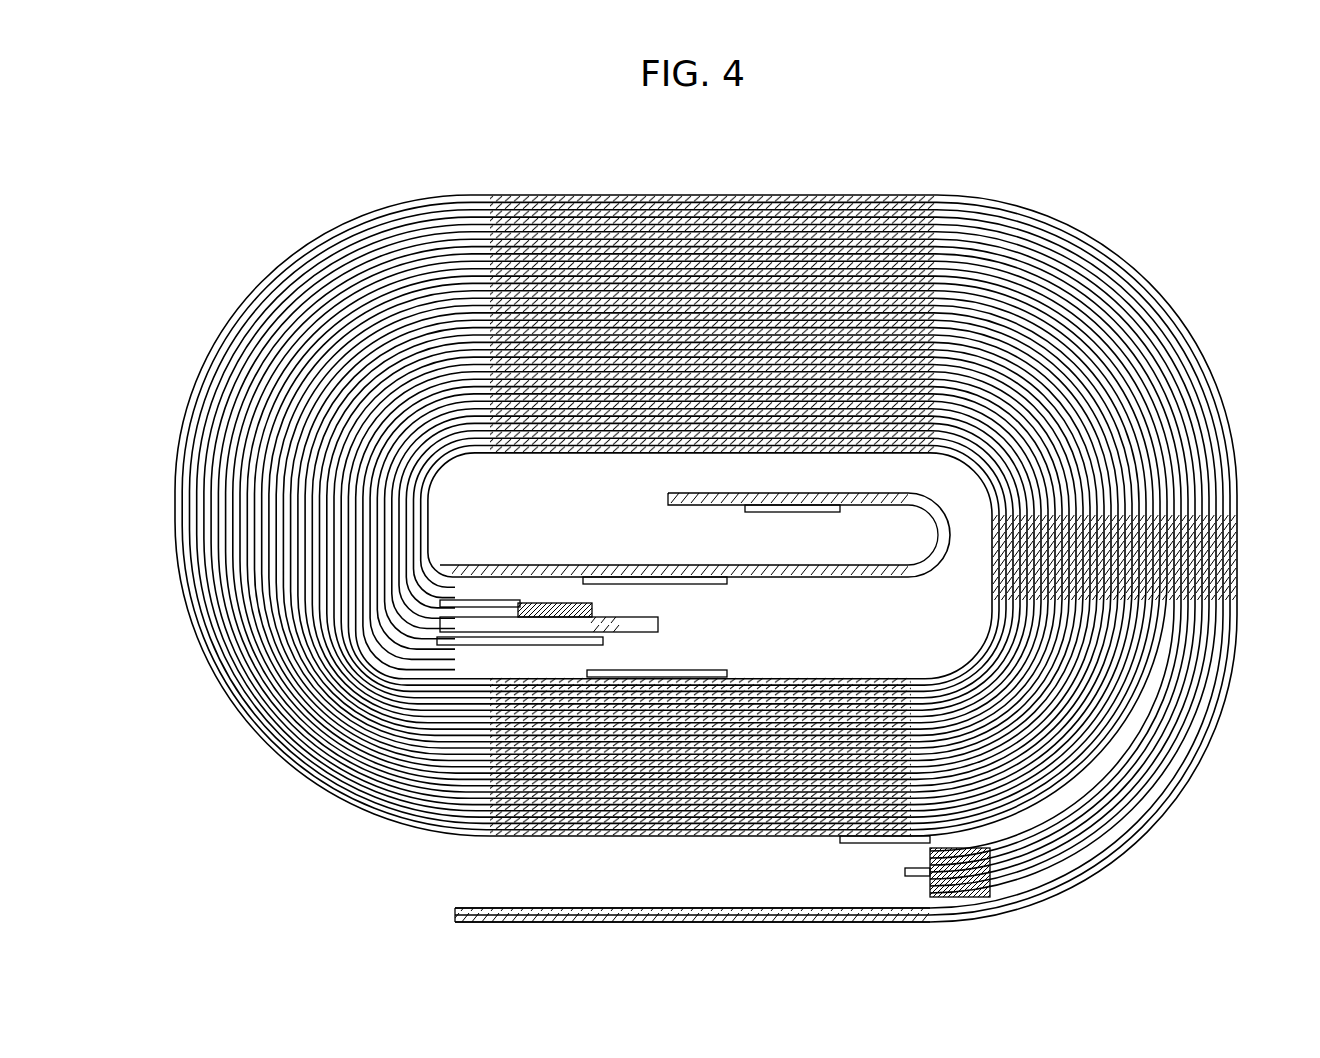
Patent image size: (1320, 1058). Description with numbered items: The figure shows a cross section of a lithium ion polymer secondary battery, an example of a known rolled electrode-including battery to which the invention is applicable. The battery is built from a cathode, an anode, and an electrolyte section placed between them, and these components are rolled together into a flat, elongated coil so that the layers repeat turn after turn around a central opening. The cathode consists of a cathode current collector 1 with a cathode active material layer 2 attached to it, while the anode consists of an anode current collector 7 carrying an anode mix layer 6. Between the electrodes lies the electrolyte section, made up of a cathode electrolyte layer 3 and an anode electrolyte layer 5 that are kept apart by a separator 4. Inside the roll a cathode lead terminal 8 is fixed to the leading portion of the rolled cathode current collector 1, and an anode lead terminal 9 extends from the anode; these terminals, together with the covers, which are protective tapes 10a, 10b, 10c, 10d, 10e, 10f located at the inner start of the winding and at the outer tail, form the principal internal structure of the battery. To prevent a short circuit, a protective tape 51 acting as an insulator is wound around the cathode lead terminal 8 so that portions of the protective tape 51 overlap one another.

The cathode current collector 1 is at (1223, 437).
The cathode active material layer 2 is at (1220, 403).
The cathode electrolyte layer 3 is at (1213, 387).
The separator 4 is at (1213, 358).
The anode electrolyte layer 5 is at (1165, 338).
The anode mix layer 6 is at (1127, 296).
The anode current collector 7 is at (1088, 263).
The cathode lead terminal 8 is at (593, 613).
The anode lead terminal 9 is at (745, 508).
The protective tape 51 is at (545, 600).
The cover (protective tape) 10a is at (411, 604).
The cover (protective tape) 10b is at (430, 645).
The cover (protective tape) 10c is at (727, 578).
The cover (protective tape) 10d is at (720, 668).
The cover (protective tape) 10e is at (840, 841).
The cover (protective tape) 10f is at (842, 906).